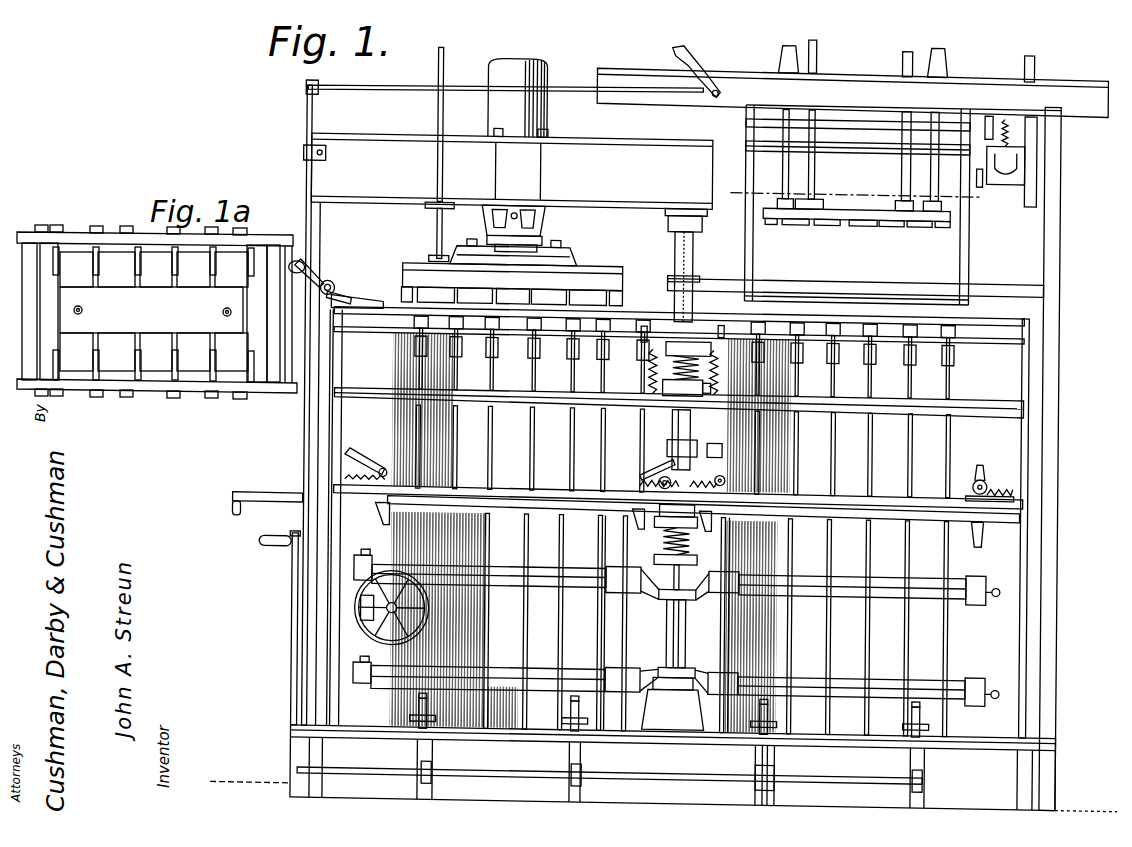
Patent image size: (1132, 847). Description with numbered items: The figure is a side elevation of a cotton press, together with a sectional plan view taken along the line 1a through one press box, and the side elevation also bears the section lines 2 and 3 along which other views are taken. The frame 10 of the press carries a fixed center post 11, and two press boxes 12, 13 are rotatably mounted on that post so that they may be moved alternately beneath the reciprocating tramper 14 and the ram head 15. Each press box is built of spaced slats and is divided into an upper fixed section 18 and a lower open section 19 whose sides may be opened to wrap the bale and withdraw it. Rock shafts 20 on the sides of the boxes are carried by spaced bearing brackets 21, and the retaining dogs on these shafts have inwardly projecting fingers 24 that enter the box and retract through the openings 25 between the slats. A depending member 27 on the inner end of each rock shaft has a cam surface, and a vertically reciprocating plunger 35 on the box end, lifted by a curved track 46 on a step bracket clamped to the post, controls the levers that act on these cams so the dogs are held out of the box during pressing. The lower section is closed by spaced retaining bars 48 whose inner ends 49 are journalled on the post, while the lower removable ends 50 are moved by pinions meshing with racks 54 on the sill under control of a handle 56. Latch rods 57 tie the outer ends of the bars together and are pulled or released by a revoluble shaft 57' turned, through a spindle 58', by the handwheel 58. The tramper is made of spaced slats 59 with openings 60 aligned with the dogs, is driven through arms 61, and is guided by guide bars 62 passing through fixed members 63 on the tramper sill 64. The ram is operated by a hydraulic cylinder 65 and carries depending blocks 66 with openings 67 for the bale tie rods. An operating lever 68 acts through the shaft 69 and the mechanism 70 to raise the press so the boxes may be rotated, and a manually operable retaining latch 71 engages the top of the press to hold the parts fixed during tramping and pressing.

In FIG. 1, the section line 2 is at (657, 312).
In FIG. 1, the section line / cross bar 3 is at (724, 304).
In FIG. 1, the frame 10 is at (1060, 226).
In FIG. 1, the center post 11 is at (690, 235).
In FIG. 1, the press box 12 is at (1020, 376).
In FIG. 1, the press box 13 is at (392, 346).
In FIG. 1, the tramper 14 is at (838, 206).
In FIG. 1, the ram head 15 is at (578, 267).
In FIG. 1, the upper fixed section 18 is at (963, 443).
In FIG. 1, the lower open section 19 is at (382, 528).
In FIG. 1A, the rock shaft 20 is at (82, 393).
In FIG. 1, the rock shaft 20 is at (905, 322).
In FIG. 1, the bearing bracket 21 is at (590, 362).
In FIG. 1A, the finger 24 is at (92, 270).
In FIG. 1, the opening 25 is at (833, 459).
In FIG. 1A, the depending member 27 is at (262, 233).
In FIG. 1, the plunger 35 is at (640, 380).
In FIG. 1, the curved track 46 is at (724, 454).
In FIG. 1, the retaining bar 48 is at (510, 594).
In FIG. 1, the inner end 49 is at (650, 594).
In FIG. 1, the lower removable end 50 is at (984, 522).
In FIG. 1, the rack 54 is at (1015, 492).
In FIG. 1, the handle 56 is at (357, 456).
In FIG. 1, the latch rod 57 is at (676, 633).
In FIG. 1, the revoluble shaft 57' is at (295, 575).
In FIG. 1, the handwheel 58 is at (414, 608).
In FIG. 1, the spindle 58' is at (303, 580).
In FIG. 1A, the slat 59 is at (197, 352).
In FIG. 1, the slat 59 is at (826, 222).
In FIG. 1A, the opening 60 is at (130, 280).
In FIG. 1, the opening 60 is at (866, 224).
In FIG. 1, the arm 61 is at (815, 56).
In FIG. 1A, the guide bar 62 is at (222, 312).
In FIG. 1, the guide bar 62 is at (937, 188).
In FIG. 1, the fixed member 63 is at (946, 62).
In FIG. 1, the tramper sill 64 is at (1060, 78).
In FIG. 1, the hydraulic cylinder 65 is at (548, 72).
In FIG. 1, the depending block 66 is at (405, 292).
In FIG. 1, the opening 67 is at (505, 292).
In FIG. 1, the operating lever 68 is at (297, 599).
In FIG. 1, the shaft 69 is at (512, 774).
In FIG. 1, the mechanism 70 is at (758, 776).
In FIG. 1, the retaining latch 71 is at (335, 290).
In FIG. 1, the section line 1a is at (863, 200).